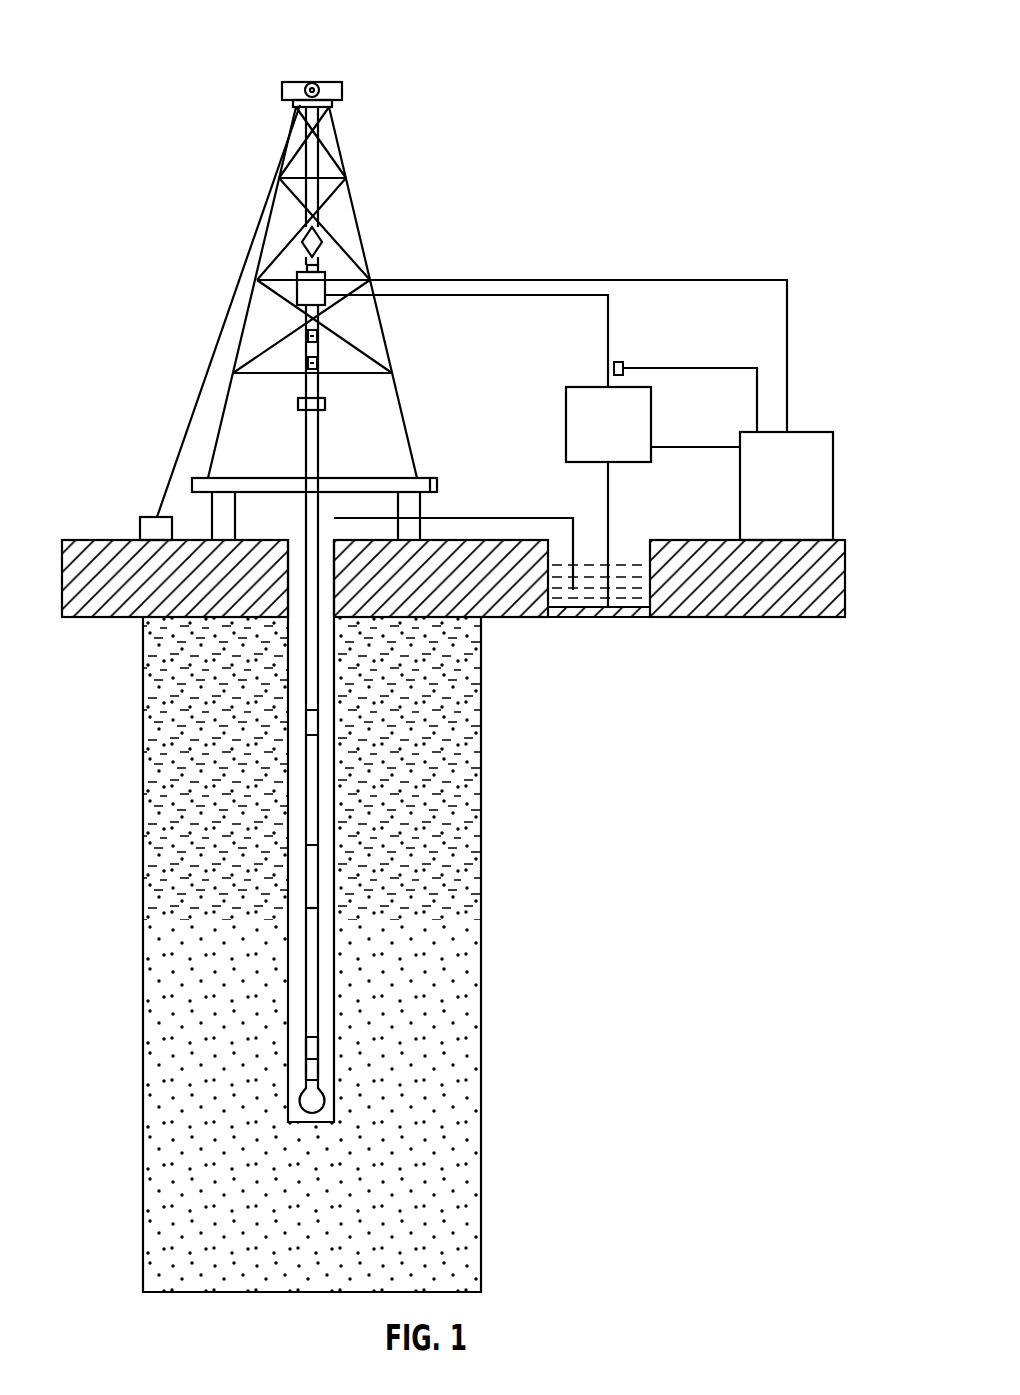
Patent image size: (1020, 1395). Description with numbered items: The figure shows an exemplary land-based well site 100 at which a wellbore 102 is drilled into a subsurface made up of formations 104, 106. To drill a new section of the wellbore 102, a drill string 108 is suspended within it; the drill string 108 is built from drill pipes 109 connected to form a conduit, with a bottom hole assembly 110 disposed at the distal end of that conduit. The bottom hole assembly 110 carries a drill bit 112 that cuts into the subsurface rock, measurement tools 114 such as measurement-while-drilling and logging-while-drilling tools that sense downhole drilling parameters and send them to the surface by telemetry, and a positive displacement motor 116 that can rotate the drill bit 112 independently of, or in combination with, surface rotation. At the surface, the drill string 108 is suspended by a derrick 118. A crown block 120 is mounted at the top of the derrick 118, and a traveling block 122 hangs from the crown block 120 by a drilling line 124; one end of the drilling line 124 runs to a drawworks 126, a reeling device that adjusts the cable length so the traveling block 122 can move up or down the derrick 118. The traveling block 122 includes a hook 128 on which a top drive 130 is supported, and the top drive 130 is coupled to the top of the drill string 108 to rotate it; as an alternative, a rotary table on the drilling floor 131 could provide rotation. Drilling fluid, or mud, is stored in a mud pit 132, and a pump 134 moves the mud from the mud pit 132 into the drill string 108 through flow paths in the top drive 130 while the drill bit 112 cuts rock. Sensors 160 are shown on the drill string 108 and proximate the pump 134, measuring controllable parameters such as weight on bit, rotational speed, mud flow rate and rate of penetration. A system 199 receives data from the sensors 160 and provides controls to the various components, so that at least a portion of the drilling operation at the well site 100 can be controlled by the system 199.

The well site 100 is at (366, 93).
The wellbore 102 is at (328, 763).
The formation 104 is at (482, 720).
The formation 106 is at (472, 1012).
The drill string 108 is at (303, 908).
The drill pipes 109 is at (310, 710).
The bottom hole assembly 110 is at (307, 1045).
The drill bit 112 is at (323, 1102).
The measurement tools 114 is at (312, 1040).
The positive displacement motor 116 is at (313, 1073).
The derrick 118 is at (348, 192).
The crown block 120 is at (312, 82).
The traveling block 122 is at (315, 242).
The drilling line 124 is at (320, 158).
The drawworks 126 is at (150, 517).
The hook 128 is at (307, 260).
The top drive 130 is at (297, 288).
The drilling floor 131 is at (343, 477).
The mud pit 132 is at (647, 553).
The pump 134 is at (587, 441).
The sensors 160 is at (317, 363).
The system 199 is at (766, 501).